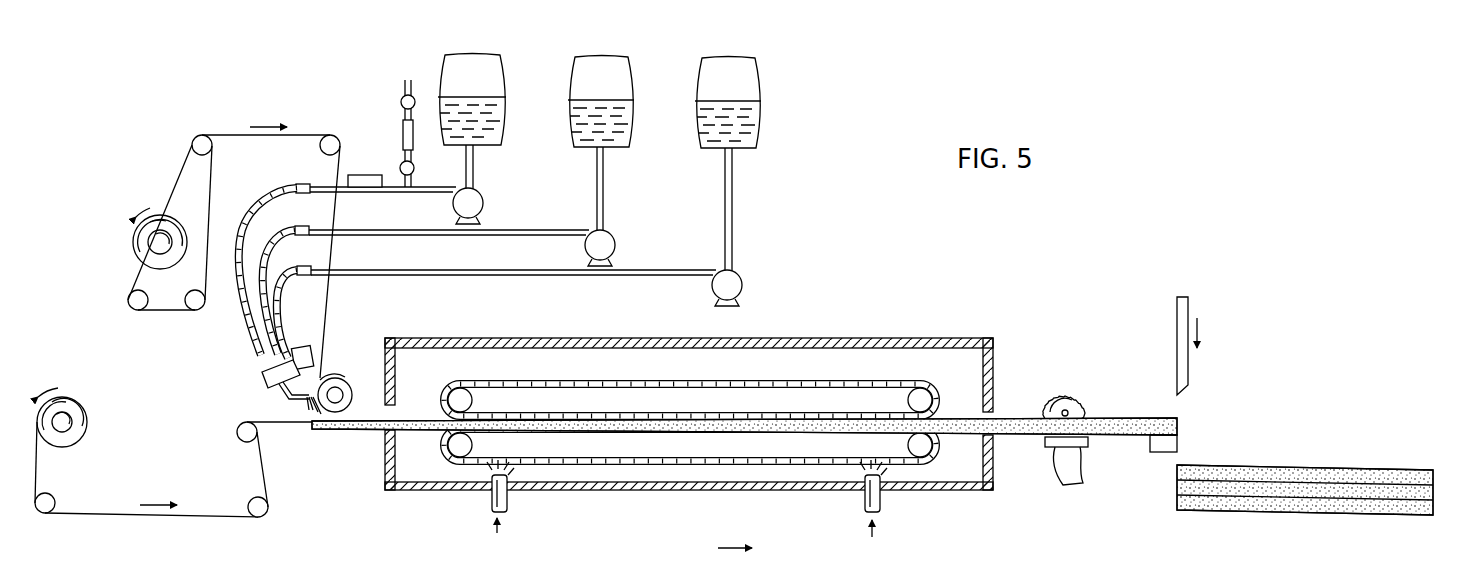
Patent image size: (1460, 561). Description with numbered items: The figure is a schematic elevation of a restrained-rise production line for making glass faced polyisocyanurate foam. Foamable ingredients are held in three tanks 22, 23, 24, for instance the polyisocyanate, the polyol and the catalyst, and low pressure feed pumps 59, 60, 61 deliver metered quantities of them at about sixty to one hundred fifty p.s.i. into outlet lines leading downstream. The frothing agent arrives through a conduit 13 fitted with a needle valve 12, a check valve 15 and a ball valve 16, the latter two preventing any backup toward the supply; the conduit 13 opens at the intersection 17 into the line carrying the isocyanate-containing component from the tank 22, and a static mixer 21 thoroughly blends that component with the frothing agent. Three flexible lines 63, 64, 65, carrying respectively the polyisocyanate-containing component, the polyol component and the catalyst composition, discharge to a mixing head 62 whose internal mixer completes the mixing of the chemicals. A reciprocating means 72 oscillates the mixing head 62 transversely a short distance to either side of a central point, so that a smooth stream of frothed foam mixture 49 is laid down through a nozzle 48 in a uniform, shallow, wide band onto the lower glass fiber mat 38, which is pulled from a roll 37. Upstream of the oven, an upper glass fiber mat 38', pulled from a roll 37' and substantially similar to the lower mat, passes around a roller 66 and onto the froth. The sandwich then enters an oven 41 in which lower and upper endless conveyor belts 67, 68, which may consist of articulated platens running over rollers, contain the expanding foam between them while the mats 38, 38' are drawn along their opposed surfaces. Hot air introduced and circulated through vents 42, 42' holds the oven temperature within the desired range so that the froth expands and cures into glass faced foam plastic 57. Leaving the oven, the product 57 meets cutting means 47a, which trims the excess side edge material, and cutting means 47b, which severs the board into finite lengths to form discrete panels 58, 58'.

The needle valve 12 is at (402, 99).
The conduit 13 is at (404, 156).
The check valve 15 is at (402, 125).
The ball valve 16 is at (420, 163).
The T-intersection 17 is at (411, 193).
The static mixer 21 is at (362, 175).
The tank 22 is at (499, 63).
The tank 23 is at (630, 63).
The tank 24 is at (758, 63).
The roll of lower glass fiber mat material 37 is at (80, 413).
The roll of upper glass fiber mat material 37' is at (160, 222).
The lower glass fiber mat 38 is at (178, 490).
The upper glass fiber mat 38' is at (251, 252).
The oven 41 is at (832, 345).
The vent 42 is at (518, 496).
The vent 42' is at (896, 498).
The cutting means 47a is at (1080, 398).
The cutting means 47b is at (1178, 345).
The nozzle 48 is at (287, 396).
The frothed foam mixture 49 is at (312, 419).
The glass faced foam plastic 57 is at (1016, 416).
The panel 58 is at (1305, 476).
The panel 58' is at (1341, 532).
The low pressure feed pump 59 is at (484, 202).
The low pressure feed pump 60 is at (617, 243).
The low pressure feed pump 61 is at (744, 278).
The mixing head 62 is at (262, 372).
The flexible line 63 is at (246, 207).
The flexible line 64 is at (266, 242).
The flexible line 65 is at (283, 282).
The roller 66 is at (345, 382).
The lower endless conveyor belt 67 is at (711, 465).
The upper endless conveyor belt 68 is at (697, 384).
The reciprocating means 72 is at (304, 346).